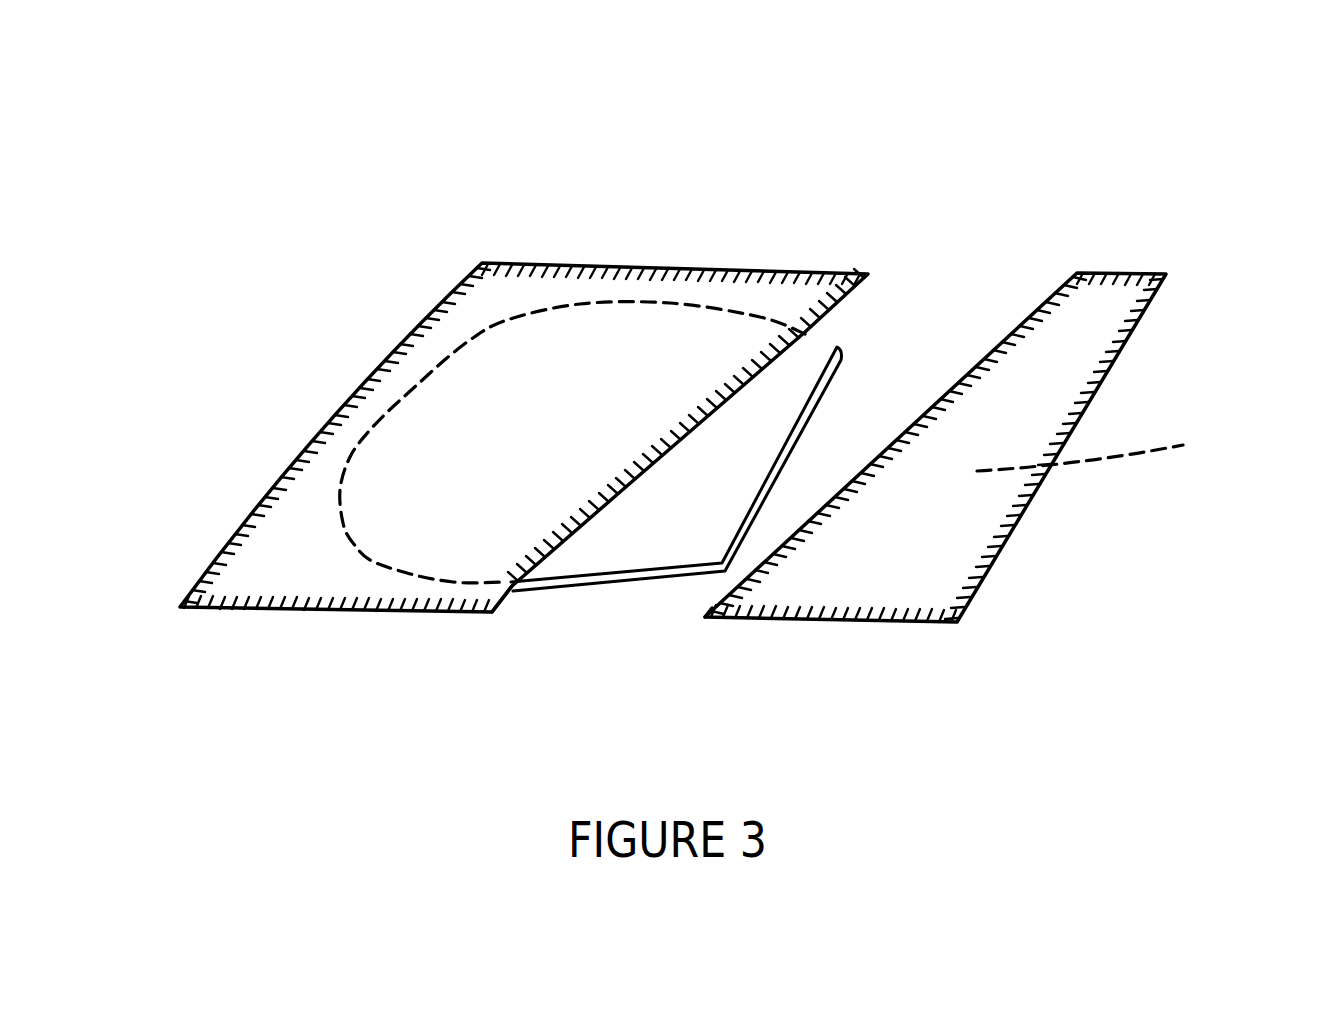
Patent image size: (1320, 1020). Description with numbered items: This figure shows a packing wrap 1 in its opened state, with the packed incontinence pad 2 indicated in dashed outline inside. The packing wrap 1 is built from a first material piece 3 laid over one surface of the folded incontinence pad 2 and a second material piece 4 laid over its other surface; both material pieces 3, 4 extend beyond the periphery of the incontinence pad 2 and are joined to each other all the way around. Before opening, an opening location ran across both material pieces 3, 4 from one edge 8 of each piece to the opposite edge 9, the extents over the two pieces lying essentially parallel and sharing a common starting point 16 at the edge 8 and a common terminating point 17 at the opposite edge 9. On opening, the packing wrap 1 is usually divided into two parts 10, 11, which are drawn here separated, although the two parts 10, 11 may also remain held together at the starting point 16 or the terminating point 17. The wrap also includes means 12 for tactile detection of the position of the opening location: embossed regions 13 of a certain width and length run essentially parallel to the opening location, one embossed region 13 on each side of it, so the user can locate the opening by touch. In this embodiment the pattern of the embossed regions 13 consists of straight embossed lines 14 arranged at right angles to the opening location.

The packing wrap 1 is at (785, 270).
The incontinence pad 2 is at (838, 345).
The first material piece 3 is at (422, 438).
The second material piece 4 is at (317, 517).
The edge 8 is at (380, 617).
The opposite edge 9 is at (652, 270).
The first part 10 is at (430, 207).
The second part 11 is at (1203, 212).
The means for tactile detection 12 is at (622, 480).
The embossed regions 13 is at (995, 350).
The embossed lines 14 is at (865, 466).
The common starting point 16 is at (493, 622).
The common terminating point 17 is at (813, 358).